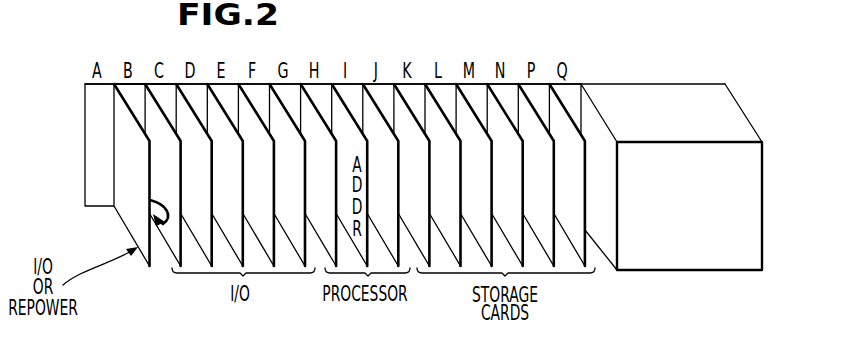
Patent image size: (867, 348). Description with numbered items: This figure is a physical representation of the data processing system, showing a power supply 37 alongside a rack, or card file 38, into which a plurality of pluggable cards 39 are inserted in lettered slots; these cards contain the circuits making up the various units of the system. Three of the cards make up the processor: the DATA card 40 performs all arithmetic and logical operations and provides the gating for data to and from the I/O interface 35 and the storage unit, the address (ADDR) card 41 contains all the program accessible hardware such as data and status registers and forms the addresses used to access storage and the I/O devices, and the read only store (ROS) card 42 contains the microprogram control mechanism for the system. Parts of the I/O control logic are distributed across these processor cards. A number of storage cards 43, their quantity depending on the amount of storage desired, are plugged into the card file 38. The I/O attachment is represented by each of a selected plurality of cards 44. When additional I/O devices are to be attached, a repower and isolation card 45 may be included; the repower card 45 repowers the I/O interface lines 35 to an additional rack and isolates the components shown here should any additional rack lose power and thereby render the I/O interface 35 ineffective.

The I/O interface 35 is at (150, 200).
The power supply 37 is at (687, 265).
The card file 38 is at (83, 150).
The pluggable cards 39 is at (143, 90).
The DATA card 40 is at (337, 147).
The address card 41 is at (372, 165).
The read only store card 42 is at (402, 197).
The storage cards 43 is at (468, 178).
The I/O attachment cards 44 is at (183, 181).
The repower and isolation card 45 is at (139, 181).